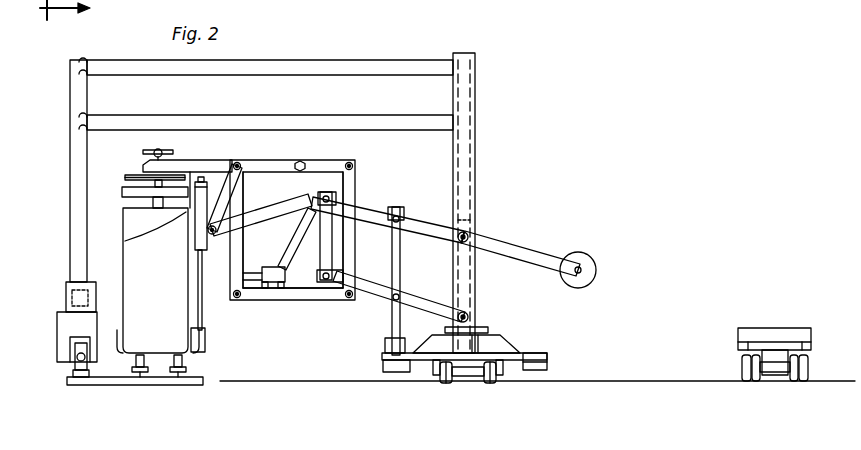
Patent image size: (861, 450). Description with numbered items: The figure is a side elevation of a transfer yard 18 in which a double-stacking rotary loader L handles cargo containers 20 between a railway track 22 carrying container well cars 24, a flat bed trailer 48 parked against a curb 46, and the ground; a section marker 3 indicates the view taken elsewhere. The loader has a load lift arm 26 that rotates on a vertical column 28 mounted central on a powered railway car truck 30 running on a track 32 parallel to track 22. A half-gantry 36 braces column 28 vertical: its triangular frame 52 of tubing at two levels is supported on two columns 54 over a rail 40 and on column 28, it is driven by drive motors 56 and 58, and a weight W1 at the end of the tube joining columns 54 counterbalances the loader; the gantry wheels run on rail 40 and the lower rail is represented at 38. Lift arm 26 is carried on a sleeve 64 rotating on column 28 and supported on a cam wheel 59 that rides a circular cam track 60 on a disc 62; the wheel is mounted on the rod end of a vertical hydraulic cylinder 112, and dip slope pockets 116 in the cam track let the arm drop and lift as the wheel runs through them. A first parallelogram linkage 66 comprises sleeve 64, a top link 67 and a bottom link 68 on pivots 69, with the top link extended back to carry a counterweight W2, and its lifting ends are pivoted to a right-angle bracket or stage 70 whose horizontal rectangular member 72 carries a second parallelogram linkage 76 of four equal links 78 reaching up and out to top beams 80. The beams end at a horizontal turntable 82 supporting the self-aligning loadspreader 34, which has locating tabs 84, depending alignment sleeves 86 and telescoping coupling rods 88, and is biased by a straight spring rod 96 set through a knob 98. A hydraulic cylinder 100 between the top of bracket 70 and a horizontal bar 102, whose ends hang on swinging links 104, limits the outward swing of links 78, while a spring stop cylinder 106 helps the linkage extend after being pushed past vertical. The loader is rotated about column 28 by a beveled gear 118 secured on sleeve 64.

The section line 3- 3 is at (71, 10).
The transfer yard 18 is at (648, 382).
The cargo container 20 is at (125, 280).
The railway track 22 is at (186, 386).
The container well car 24 is at (200, 352).
The load lift arm 26 is at (438, 222).
The vertical column 28 is at (478, 160).
The powered railway car truck 30 is at (438, 378).
The track 32 is at (487, 384).
The self-aligning loadspreader 34 is at (125, 197).
The half-gantry 36 is at (142, 77).
The roller 38 is at (78, 368).
The rail 40 is at (86, 372).
The curb 46 is at (822, 378).
The flat bed trailer 48 is at (738, 345).
The triangular frame 52 is at (390, 77).
The column 54 is at (70, 175).
The drive motor 56 is at (512, 340).
The drive motor 58 is at (57, 327).
The cam wheel 59 is at (382, 350).
The circular cam track 60 is at (538, 355).
The disc 62 is at (548, 362).
The sleeve 64 is at (478, 292).
The first parallelogram linkage 66 is at (376, 212).
The top link 67 is at (514, 246).
The bottom link 68 is at (383, 300).
The pivot 69 is at (475, 233).
The right-angle bracket or stage 70 is at (336, 259).
The horizontal rectangular member 72 is at (328, 303).
The second parallelogram linkage 76 is at (268, 303).
The link 78 is at (244, 190).
The top beam 80 is at (212, 160).
The horizontal turntable 82 is at (125, 178).
The locating tab 84 is at (126, 240).
The alignment sleeve 86 is at (203, 268).
The locating and coupling rod 88 is at (205, 330).
The straight spring rod 96 is at (152, 152).
The knob 98 is at (168, 152).
The hydraulic cylinder 100 is at (286, 222).
The horizontal bar 102 is at (212, 235).
The swinging link 104 is at (235, 164).
The spring stop cylinder 106 is at (282, 262).
The vertical hydraulic cylinder 112 is at (401, 272).
The dip slope pocket 116 is at (392, 374).
The beveled gear 118 is at (493, 325).
The double-stacking rotary loader L is at (501, 207).
The weight W1 is at (66, 292).
The counterweight W2 is at (598, 262).